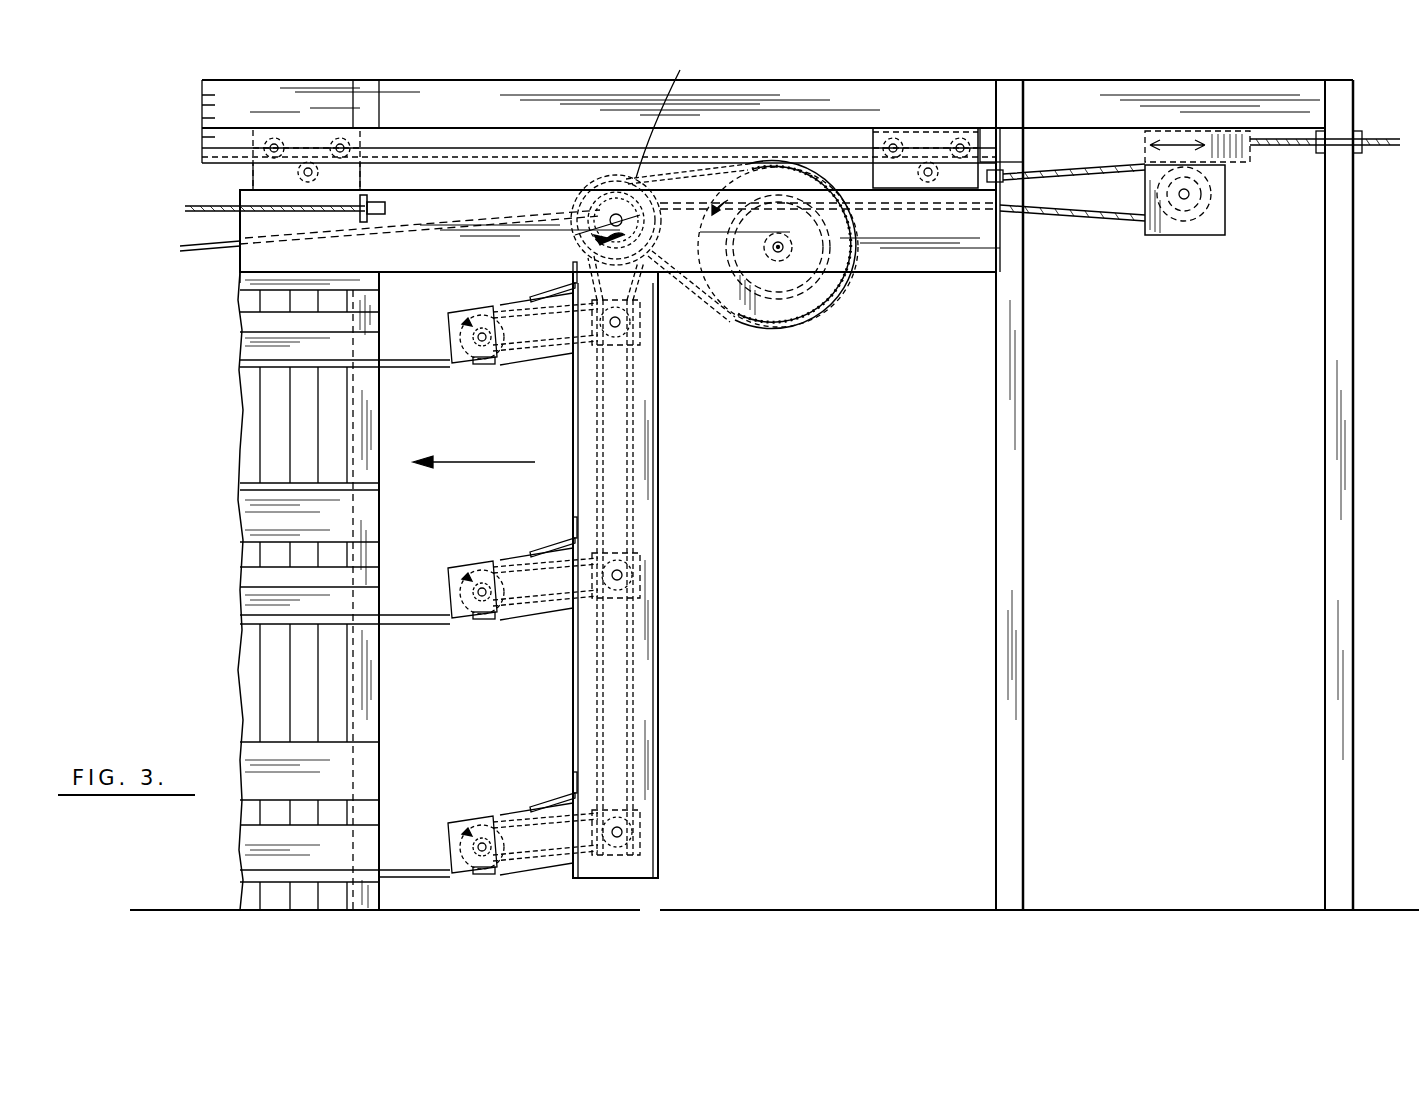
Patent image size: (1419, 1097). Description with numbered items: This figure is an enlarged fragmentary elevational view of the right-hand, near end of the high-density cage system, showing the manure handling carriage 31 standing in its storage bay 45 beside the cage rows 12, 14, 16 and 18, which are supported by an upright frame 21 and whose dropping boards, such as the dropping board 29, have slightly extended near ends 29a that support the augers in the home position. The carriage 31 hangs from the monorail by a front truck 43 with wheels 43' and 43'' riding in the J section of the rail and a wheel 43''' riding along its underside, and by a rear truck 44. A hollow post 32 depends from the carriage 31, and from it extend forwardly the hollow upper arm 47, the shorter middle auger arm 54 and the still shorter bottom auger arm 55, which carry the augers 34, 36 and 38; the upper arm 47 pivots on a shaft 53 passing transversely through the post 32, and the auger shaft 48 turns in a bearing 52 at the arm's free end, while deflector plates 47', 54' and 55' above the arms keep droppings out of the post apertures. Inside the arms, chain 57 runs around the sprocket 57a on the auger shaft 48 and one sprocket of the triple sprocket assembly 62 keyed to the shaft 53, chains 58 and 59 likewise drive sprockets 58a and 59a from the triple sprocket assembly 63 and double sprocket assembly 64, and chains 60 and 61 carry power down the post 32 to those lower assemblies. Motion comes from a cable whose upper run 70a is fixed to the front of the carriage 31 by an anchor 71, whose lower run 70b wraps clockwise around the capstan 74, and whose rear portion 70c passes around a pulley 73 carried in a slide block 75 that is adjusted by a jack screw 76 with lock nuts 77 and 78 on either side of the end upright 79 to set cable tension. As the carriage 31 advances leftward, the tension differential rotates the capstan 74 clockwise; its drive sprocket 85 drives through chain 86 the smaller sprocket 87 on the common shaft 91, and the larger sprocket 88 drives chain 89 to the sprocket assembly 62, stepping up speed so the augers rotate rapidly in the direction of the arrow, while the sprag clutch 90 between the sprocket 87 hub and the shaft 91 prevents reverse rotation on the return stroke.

The cage row 12 is at (250, 300).
The cage row 14 is at (260, 417).
The cage row 16 is at (260, 660).
The cage row 18 is at (260, 897).
The upright frame 21 is at (372, 697).
The dropping board 29 is at (252, 856).
The extended end of dropping board 29a is at (427, 855).
The carriage 31 is at (935, 262).
The post 32 is at (648, 430).
The auger 34 is at (462, 352).
The auger 36 is at (465, 608).
The auger 38 is at (465, 862).
The truck 43 is at (296, 118).
The wheel 43' is at (242, 102).
The wheel 43'' is at (361, 102).
The wheel 43''' is at (321, 114).
The truck 44 is at (920, 132).
The storage bay 45 is at (945, 679).
The upper arm 47 is at (530, 347).
The deflector plate 47' is at (531, 282).
The auger shaft 48 is at (470, 337).
The bearing 52 is at (483, 350).
The shaft 53 is at (640, 324).
The middle auger arm 54 is at (545, 605).
The deflector plate 54' is at (541, 532).
The bottom auger arm 55 is at (545, 817).
The deflector plate 55' is at (551, 781).
The chain 57 is at (502, 308).
The sprocket 57a is at (511, 365).
The chain 58 is at (512, 562).
The sprocket 58a is at (498, 620).
The chain 59 is at (497, 817).
The sprocket 59a is at (525, 866).
The chain 60 is at (636, 482).
The chain 61 is at (636, 710).
The triple sprocket assembly 62 is at (655, 352).
The triple sprocket assembly 63 is at (640, 583).
The double sprocket assembly 64 is at (640, 830).
The upper run of cable 70a is at (207, 206).
The lower run of cable 70b is at (222, 252).
The rear end portion of cable 70c is at (1087, 222).
The anchor 71 is at (382, 205).
The pulley 73 is at (1212, 200).
The capstan 74 is at (1005, 170).
The slide block 75 is at (1205, 235).
The screw actuator 76 is at (1290, 138).
The lock nut 77 is at (1320, 156).
The lock nut 78 is at (1362, 156).
The end upright 79 is at (1340, 283).
The drive sprocket 85 is at (845, 300).
The chain 86 is at (735, 322).
The smaller sprocket 87 is at (612, 178).
The larger sprocket 88 is at (592, 194).
The chain 89 is at (662, 112).
The sprag clutch 90 is at (761, 247).
The shaft 91 is at (589, 233).